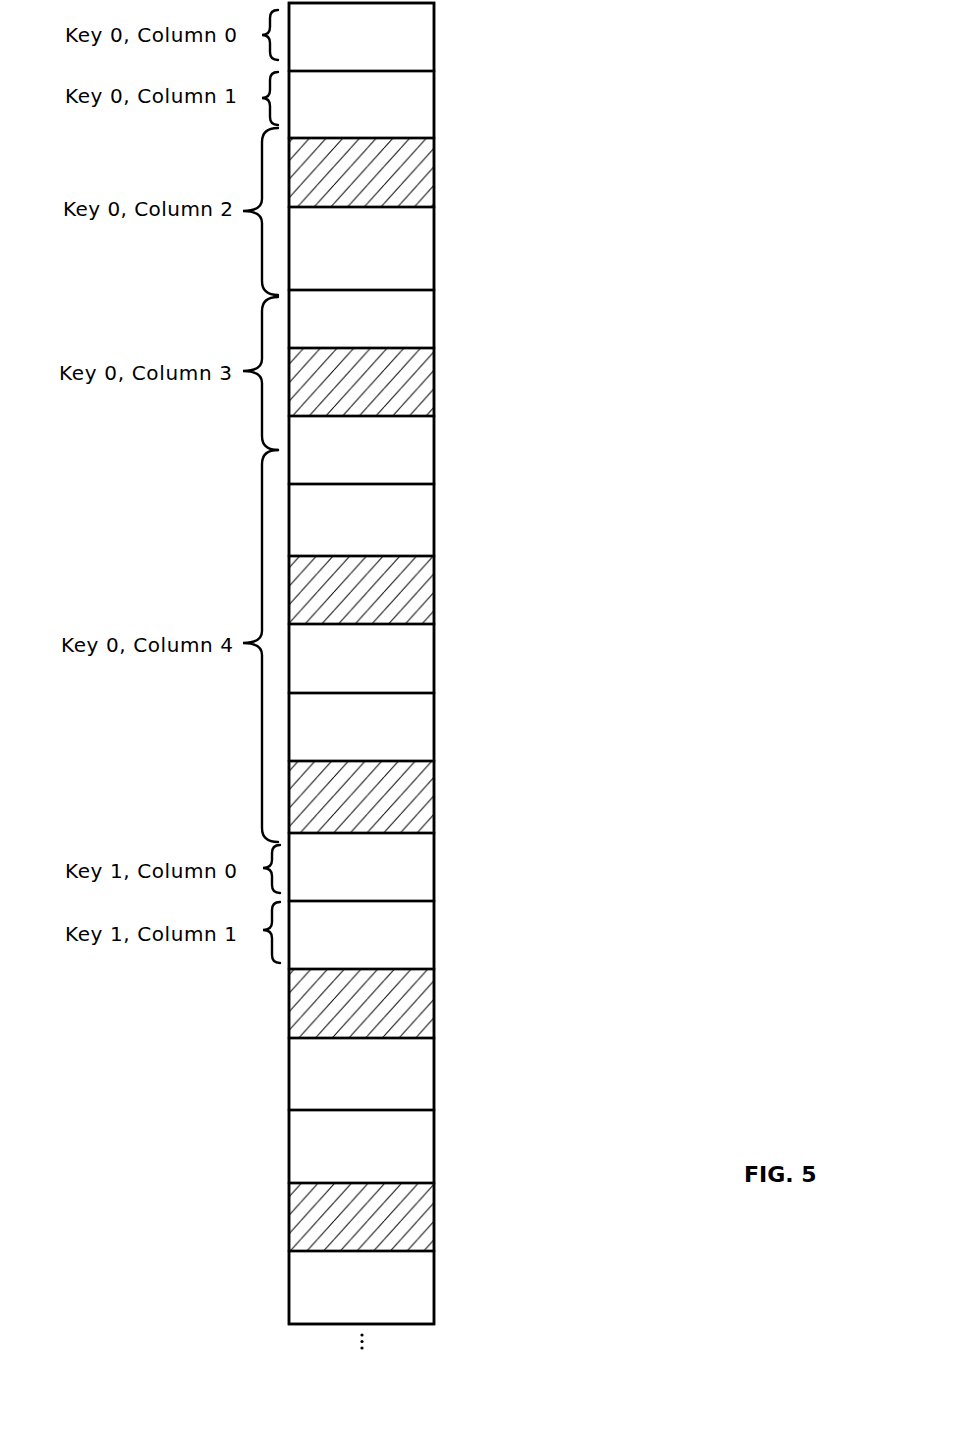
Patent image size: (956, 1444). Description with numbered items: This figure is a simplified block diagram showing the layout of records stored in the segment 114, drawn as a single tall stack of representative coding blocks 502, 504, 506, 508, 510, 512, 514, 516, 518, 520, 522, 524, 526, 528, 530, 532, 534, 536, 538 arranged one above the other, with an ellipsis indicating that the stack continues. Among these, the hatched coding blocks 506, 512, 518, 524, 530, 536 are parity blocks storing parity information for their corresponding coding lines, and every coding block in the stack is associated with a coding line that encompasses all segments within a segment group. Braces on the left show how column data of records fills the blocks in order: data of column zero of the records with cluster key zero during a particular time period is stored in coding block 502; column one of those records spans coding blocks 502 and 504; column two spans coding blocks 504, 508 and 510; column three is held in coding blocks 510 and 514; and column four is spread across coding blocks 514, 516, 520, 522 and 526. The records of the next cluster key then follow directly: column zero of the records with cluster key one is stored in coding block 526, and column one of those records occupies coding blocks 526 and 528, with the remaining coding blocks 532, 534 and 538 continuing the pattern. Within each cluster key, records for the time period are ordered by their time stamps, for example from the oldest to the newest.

The segment 114 is at (755, 138).
The coding block 502 is at (434, 38).
The coding block 504 is at (434, 109).
The parity block 506 is at (434, 171).
The coding block 508 is at (434, 246).
The coding block 510 is at (434, 317).
The parity block 512 is at (434, 389).
The coding block 514 is at (434, 451).
The coding block 516 is at (434, 526).
The parity block 518 is at (434, 596).
The coding block 520 is at (434, 670).
The coding block 522 is at (434, 731).
The parity block 524 is at (434, 803).
The coding block 526 is at (434, 868).
The coding block 528 is at (434, 939).
The parity block 530 is at (434, 1003).
The coding block 532 is at (434, 1076).
The coding block 534 is at (434, 1143).
The parity block 536 is at (434, 1218).
The coding block 538 is at (434, 1278).